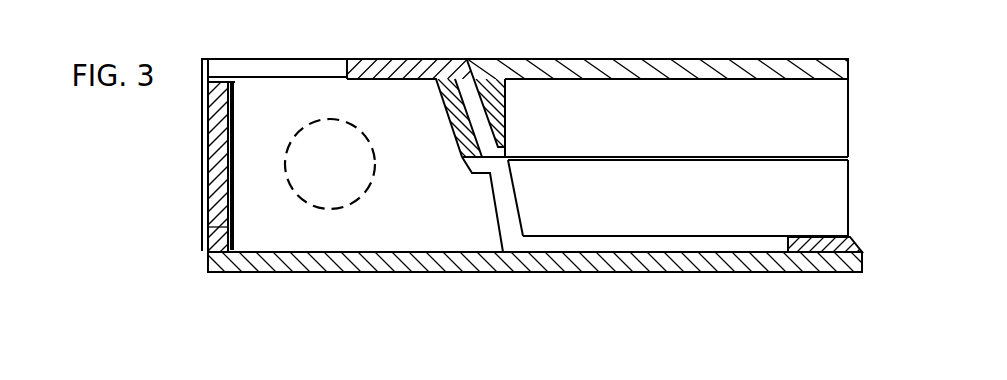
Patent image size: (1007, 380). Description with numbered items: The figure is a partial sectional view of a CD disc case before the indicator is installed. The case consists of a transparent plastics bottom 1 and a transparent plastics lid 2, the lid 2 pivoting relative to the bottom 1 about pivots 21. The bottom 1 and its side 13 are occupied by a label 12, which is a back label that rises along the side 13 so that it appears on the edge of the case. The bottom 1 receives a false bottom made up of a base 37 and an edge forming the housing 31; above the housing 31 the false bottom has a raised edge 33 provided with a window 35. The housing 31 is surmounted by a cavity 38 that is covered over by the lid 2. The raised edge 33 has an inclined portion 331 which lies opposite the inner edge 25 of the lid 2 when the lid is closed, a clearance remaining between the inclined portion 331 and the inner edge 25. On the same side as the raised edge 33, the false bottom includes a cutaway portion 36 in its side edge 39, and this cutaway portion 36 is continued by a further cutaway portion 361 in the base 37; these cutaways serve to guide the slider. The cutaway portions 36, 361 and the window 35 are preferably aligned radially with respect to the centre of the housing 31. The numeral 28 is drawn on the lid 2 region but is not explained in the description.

The bottom 1 is at (353, 270).
The lid 2 is at (718, 56).
The label 12 is at (235, 112).
The edge 13 is at (217, 224).
The pivots 21 is at (365, 158).
The inner edge 25 is at (505, 107).
The top wall of cover 28 is at (606, 82).
The housing 31 is at (680, 209).
The raised edge 33 is at (374, 56).
The inclined portion 331 is at (467, 60).
The window 35 is at (282, 72).
The cutaway portion 36 is at (503, 208).
The cutaway portion 361 is at (658, 243).
The base 37 is at (829, 273).
The cavity 38 is at (668, 137).
The side edge 39 is at (525, 202).